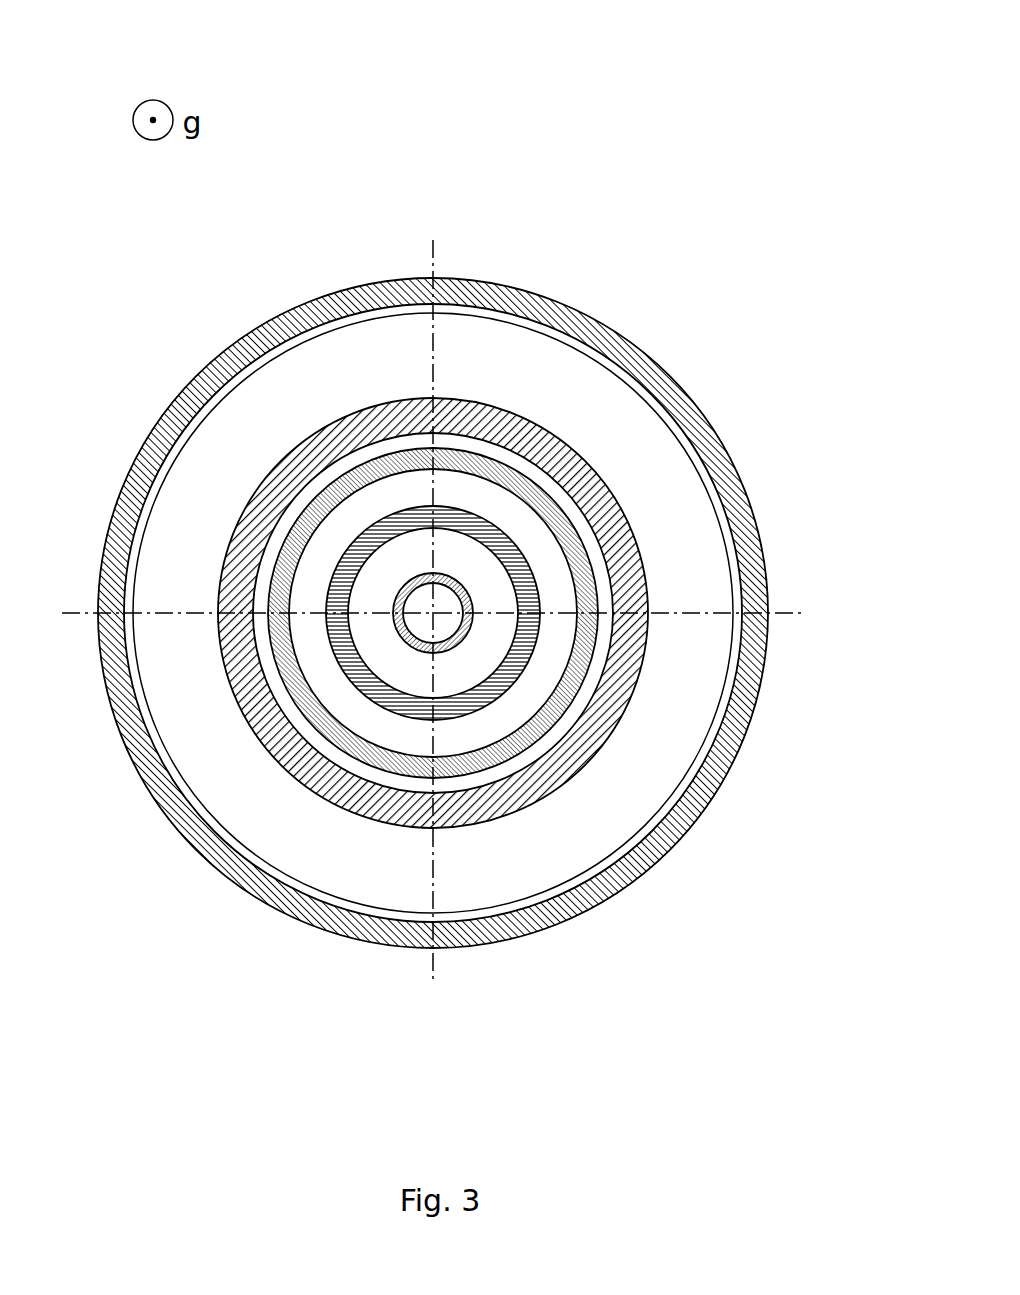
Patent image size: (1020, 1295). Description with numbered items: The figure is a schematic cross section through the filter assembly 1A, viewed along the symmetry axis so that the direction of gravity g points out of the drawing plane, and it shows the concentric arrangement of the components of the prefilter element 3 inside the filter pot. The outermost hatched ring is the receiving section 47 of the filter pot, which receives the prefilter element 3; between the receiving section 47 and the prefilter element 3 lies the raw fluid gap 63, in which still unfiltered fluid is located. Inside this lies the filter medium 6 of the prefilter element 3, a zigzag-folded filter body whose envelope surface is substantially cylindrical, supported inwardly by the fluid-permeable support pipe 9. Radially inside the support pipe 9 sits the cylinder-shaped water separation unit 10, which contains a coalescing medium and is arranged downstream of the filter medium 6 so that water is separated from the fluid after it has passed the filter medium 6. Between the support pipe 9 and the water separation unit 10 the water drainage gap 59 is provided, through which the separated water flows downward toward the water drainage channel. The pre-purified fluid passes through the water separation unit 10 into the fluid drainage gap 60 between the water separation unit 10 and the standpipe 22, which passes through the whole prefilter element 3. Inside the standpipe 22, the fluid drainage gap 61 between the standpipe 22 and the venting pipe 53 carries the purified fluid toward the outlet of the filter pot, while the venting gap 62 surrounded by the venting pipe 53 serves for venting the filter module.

The filter assembly 1A is at (430, 120).
The prefilter element 3 is at (873, 492).
The filter medium 6 is at (730, 548).
The support pipe 9 is at (647, 632).
The water separation unit 10 is at (570, 700).
The standpipe 22 is at (453, 717).
The receiving section 47 is at (600, 327).
The venting pipe 53 is at (402, 590).
The water drainage gap 59 is at (470, 445).
The fluid drainage gap 60 is at (540, 558).
The fluid drainage gap 61 is at (385, 642).
The venting gap 62 is at (420, 627).
The raw fluid gap 63 is at (275, 322).